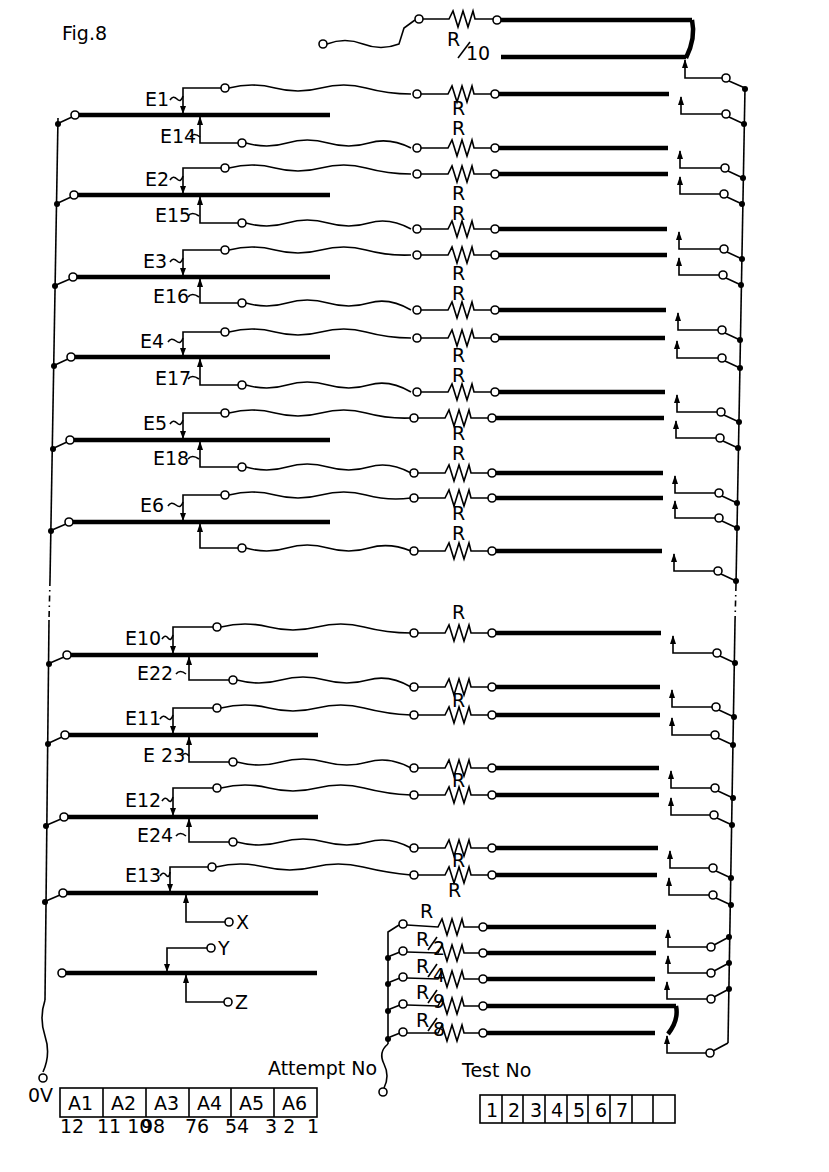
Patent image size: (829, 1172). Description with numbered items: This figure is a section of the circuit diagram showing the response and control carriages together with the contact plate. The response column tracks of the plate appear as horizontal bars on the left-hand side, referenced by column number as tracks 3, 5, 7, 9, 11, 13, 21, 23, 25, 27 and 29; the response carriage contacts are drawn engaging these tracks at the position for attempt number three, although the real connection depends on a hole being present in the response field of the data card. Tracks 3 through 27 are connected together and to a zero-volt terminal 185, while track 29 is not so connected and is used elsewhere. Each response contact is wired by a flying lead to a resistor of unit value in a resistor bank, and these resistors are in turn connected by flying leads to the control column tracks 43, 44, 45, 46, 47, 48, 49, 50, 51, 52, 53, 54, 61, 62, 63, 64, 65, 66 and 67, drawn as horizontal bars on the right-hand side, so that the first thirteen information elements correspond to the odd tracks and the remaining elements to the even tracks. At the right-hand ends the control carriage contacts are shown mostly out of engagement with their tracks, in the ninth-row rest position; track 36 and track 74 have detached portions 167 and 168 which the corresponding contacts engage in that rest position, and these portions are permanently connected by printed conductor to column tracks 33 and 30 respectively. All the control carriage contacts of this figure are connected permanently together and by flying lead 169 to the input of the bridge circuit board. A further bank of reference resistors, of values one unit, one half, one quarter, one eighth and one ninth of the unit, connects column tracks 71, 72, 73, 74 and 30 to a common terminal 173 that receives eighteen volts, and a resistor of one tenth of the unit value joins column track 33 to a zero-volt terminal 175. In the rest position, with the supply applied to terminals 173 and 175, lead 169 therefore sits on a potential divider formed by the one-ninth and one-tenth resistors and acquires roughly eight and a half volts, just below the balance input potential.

The response column track 3 is at (209, 115).
The response column track 5 is at (208, 195).
The response column track 7 is at (208, 277).
The response column track 9 is at (207, 357).
The response column track 11 is at (212, 440).
The response column track 13 is at (212, 522).
The response column track 21 is at (205, 655).
The response column track 23 is at (204, 735).
The response column track 25 is at (204, 817).
The response column track 27 is at (203, 893).
The response column track 29 is at (202, 973).
The control column track 30 is at (575, 1015).
The control column track 33 is at (583, 29).
The control column track 36 is at (583, 66).
The control column track 43 is at (583, 103).
The control column track 44 is at (583, 157).
The control column track 45 is at (583, 183).
The control column track 46 is at (583, 238).
The control column track 47 is at (583, 264).
The control column track 48 is at (583, 319).
The control column track 49 is at (583, 347).
The control column track 50 is at (583, 401).
The control column track 51 is at (582, 427).
The control column track 52 is at (582, 482).
The control column track 53 is at (582, 507).
The control column track 54 is at (582, 560).
The control column track 61 is at (578, 642).
The control column track 62 is at (578, 696).
The control column track 63 is at (578, 724).
The control column track 64 is at (578, 777).
The control column track 65 is at (578, 804).
The control column track 66 is at (578, 857).
The control column track 67 is at (578, 884).
The control column track 71 is at (575, 936).
The control column track 72 is at (575, 962).
The control column track 73 is at (575, 988).
The control column track 74 is at (575, 1042).
The detached portion 167 is at (687, 63).
The detached portion 168 is at (672, 1040).
The flying lead 169 is at (772, 382).
The terminal 173 is at (384, 1024).
The zero volt terminal 175 is at (321, 42).
The zero volt terminal 185 is at (46, 1076).